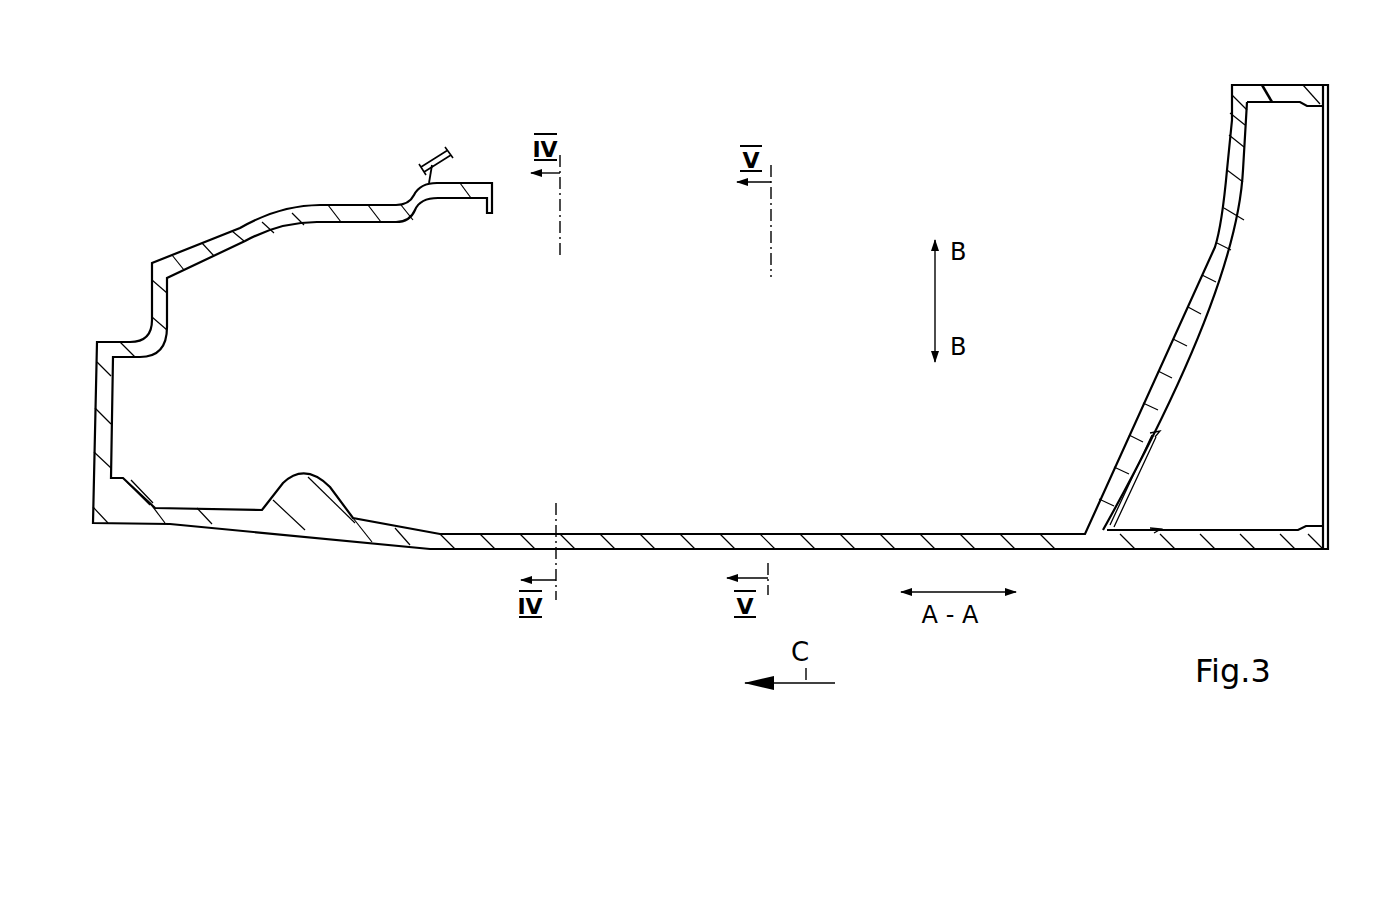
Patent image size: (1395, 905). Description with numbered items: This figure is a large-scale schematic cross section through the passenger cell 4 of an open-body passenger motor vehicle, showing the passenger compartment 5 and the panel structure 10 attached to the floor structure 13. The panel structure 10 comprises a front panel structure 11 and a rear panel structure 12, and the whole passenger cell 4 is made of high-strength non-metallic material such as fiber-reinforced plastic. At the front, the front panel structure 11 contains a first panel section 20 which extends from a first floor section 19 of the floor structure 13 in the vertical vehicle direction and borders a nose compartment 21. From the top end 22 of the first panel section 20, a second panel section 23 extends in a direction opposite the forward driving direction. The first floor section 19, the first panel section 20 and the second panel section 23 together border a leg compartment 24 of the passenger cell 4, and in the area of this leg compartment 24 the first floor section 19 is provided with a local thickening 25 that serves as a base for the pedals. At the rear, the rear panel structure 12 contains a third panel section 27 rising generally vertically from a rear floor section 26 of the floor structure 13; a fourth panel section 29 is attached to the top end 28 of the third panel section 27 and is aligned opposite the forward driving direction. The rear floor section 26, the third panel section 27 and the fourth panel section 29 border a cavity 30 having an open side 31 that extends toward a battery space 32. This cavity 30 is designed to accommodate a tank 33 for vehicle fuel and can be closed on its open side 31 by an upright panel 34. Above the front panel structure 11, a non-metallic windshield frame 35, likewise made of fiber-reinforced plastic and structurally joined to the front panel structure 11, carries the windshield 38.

The passenger cell 4 is at (484, 181).
The passenger compartment 5 is at (825, 469).
The panel structure 10 is at (182, 247).
The front panel structure 11 is at (394, 226).
The rear panel structure 12 is at (1265, 116).
The floor structure 13 is at (606, 533).
The first floor section 19 is at (197, 526).
The first panel section 20 is at (113, 392).
The nose compartment 21 is at (72, 420).
The top end 22 is at (186, 290).
The second panel section 23 is at (432, 212).
The leg compartment 24 is at (463, 449).
The local thickening 25 is at (330, 509).
The rear floor section 26 is at (1076, 540).
The third panel section 27 is at (1137, 425).
The top end 28 is at (1222, 117).
The fourth panel section 29 is at (1274, 84).
The cavity 30 is at (1258, 348).
The open side 31 is at (1300, 391).
The battery space 32 is at (1358, 410).
The tank 33 is at (1139, 459).
The upright panel 34 is at (1322, 238).
The windshield frame 35 is at (420, 182).
The windshield 38 is at (426, 160).